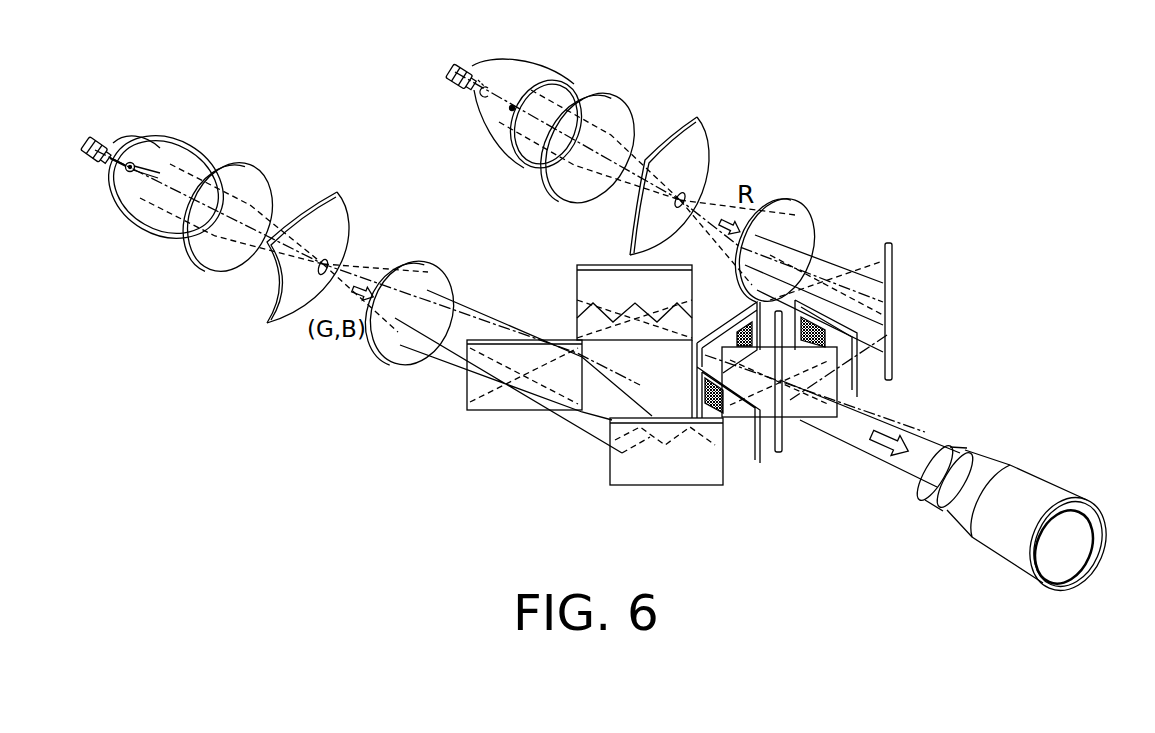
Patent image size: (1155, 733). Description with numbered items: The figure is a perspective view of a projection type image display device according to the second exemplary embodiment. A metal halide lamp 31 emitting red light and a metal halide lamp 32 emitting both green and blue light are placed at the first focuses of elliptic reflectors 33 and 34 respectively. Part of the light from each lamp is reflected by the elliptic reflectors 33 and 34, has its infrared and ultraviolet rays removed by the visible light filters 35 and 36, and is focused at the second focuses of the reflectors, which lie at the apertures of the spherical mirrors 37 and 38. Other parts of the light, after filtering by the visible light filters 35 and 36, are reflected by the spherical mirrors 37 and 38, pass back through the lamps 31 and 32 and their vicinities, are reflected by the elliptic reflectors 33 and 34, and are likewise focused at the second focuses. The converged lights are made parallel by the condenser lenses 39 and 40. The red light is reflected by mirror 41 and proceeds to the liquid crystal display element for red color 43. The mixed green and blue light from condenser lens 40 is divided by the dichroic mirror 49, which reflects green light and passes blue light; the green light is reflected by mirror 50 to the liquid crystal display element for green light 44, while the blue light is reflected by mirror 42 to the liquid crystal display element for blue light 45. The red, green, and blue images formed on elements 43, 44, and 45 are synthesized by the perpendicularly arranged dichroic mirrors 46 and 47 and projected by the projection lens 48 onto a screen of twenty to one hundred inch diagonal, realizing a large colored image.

The metal halide lamp 31 is at (497, 82).
The metal halide lamp 32 is at (118, 197).
The elliptic reflector 33 is at (533, 68).
The elliptic reflector 34 is at (148, 232).
The visible light filter 35 is at (603, 98).
The visible light filter 36 is at (222, 272).
The spherical mirror 37 is at (678, 147).
The spherical mirror 38 is at (268, 325).
The condenser lens 39 is at (793, 215).
The condenser lens 40 is at (410, 363).
The mirror 41 is at (890, 297).
The mirror 42 is at (658, 485).
The liquid crystal display element for red color 43 is at (782, 345).
The liquid crystal display element for green light 44 is at (757, 302).
The liquid crystal display element for blue light 45 is at (740, 453).
The dichroic mirror 46 is at (823, 307).
The dichroic mirror 47 is at (807, 412).
The projection lens 48 is at (1023, 465).
The dichroic mirror 49 is at (502, 412).
The mirror 50 is at (583, 303).